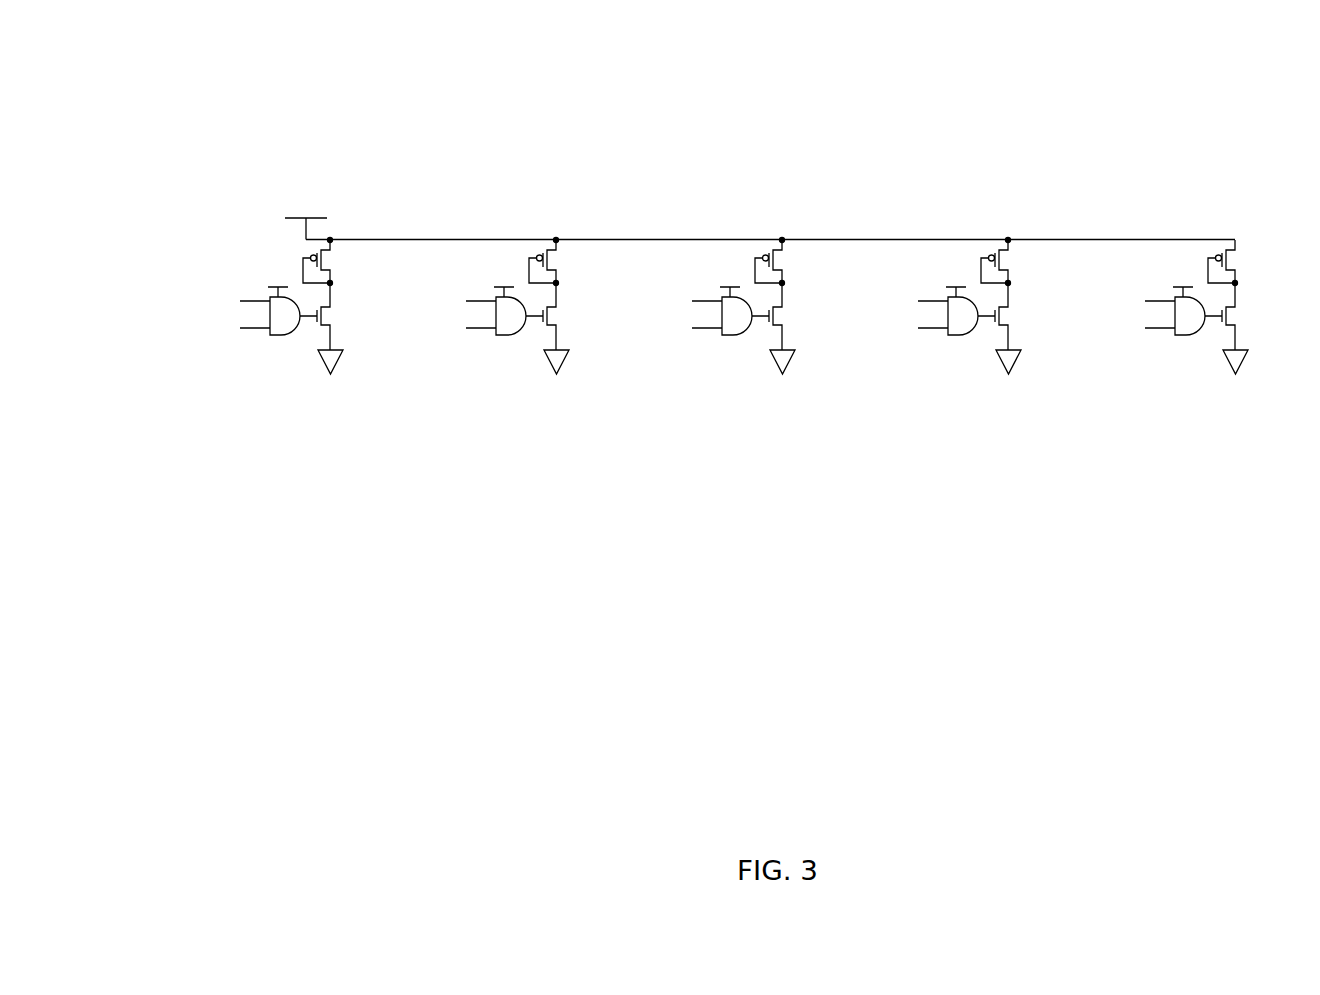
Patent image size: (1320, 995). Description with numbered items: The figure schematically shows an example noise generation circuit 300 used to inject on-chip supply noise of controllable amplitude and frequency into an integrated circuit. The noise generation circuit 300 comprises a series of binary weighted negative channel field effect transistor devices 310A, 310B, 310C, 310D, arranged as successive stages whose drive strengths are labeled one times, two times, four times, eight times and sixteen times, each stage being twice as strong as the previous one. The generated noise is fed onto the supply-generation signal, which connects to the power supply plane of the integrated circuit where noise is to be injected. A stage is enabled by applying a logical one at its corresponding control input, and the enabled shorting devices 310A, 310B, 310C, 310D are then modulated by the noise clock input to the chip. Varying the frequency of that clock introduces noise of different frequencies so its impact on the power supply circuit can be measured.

The noise generation circuit 300 is at (458, 118).
The binary weighted nFET device 310A is at (489, 310).
The binary weighted nFET device 310B is at (715, 310).
The binary weighted nFET device 310C is at (941, 310).
The binary weighted nFET device 310D is at (1173, 310).